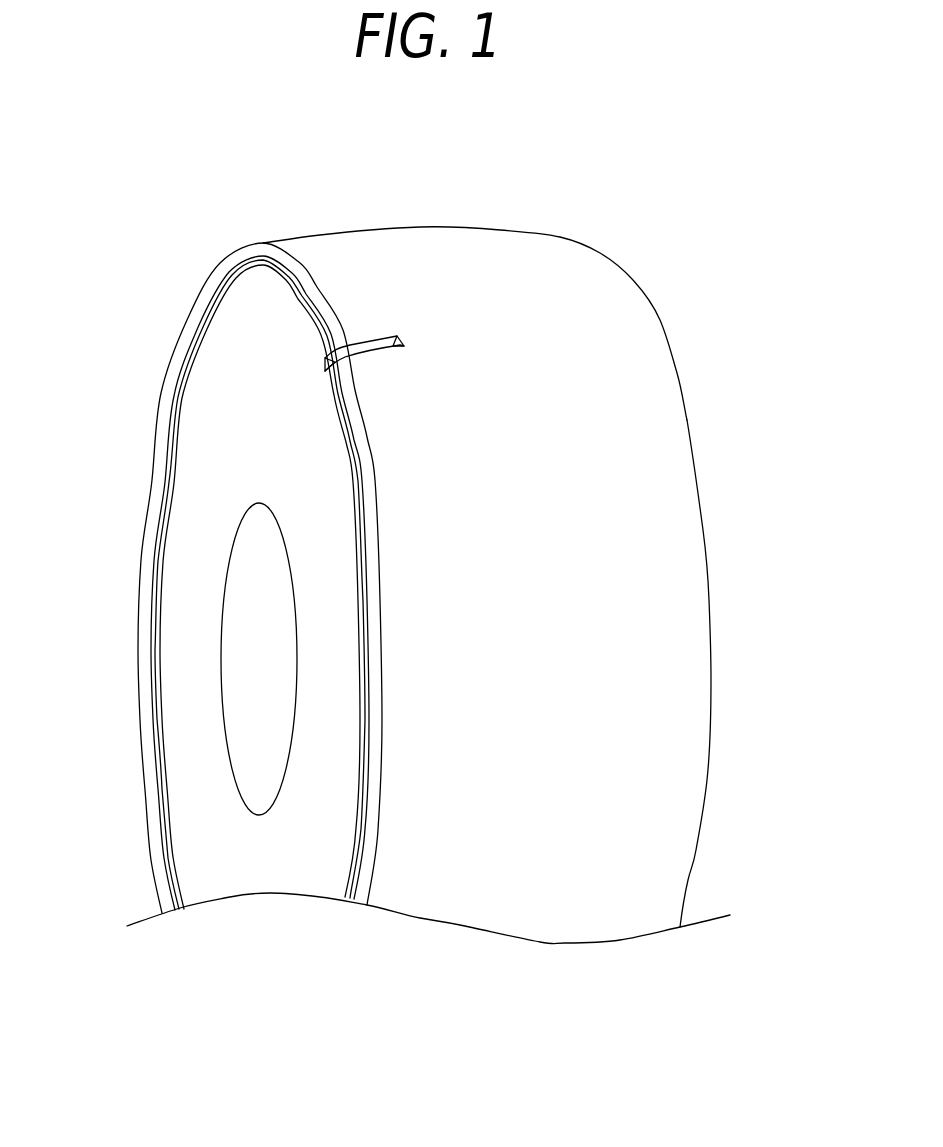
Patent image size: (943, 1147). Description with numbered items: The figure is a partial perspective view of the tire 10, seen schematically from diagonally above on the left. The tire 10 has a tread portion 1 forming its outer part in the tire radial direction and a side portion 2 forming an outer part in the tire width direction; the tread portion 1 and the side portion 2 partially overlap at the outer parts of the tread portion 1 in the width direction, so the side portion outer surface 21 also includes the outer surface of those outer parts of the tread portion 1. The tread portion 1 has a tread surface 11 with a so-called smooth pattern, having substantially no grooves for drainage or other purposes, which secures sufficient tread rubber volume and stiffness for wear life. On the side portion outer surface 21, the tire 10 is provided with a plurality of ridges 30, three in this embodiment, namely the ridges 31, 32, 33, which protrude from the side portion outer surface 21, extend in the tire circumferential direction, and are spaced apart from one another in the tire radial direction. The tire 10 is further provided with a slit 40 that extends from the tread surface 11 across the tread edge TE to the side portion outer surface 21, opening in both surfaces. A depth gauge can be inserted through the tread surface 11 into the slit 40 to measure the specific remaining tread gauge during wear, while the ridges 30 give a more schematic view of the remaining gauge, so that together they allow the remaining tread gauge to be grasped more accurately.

The tire 10 is at (511, 199).
The tread portion 1 is at (645, 432).
The tread surface 11 is at (653, 530).
The side portion 2 is at (221, 363).
The side portion outer surface 21 is at (217, 435).
The tread edge TE is at (369, 448).
The ridges 30 is at (324, 583).
The ridge 31 is at (363, 527).
The ridge 32 is at (360, 603).
The ridge 33 is at (356, 678).
The slit 40 is at (380, 342).